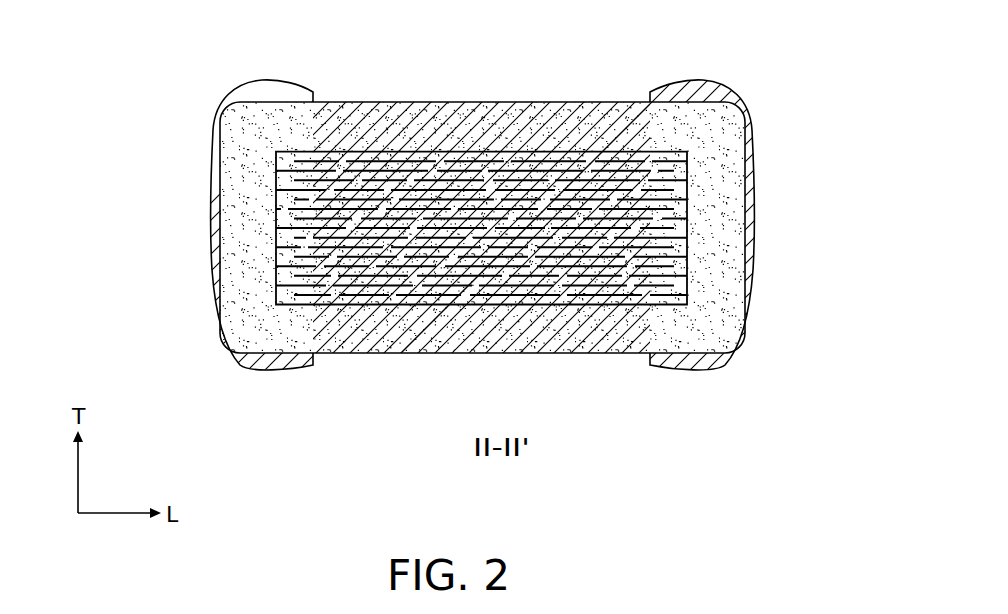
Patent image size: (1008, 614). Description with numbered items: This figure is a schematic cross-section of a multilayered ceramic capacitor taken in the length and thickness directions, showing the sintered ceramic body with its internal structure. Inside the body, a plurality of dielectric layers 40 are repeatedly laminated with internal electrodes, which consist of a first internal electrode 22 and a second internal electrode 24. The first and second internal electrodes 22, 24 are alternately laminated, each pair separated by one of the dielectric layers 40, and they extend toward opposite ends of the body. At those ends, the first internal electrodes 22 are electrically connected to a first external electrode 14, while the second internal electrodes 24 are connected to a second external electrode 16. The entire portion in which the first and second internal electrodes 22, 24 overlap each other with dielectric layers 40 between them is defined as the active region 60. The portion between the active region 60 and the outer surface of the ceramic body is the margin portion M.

The first external electrode 14 is at (235, 362).
The second external electrode 16 is at (687, 372).
The first internal electrode 22 is at (232, 150).
The second internal electrode 24 is at (720, 160).
The dielectric layer 40 is at (315, 158).
The active region 60 is at (472, 265).
The margin portion M is at (236, 238).